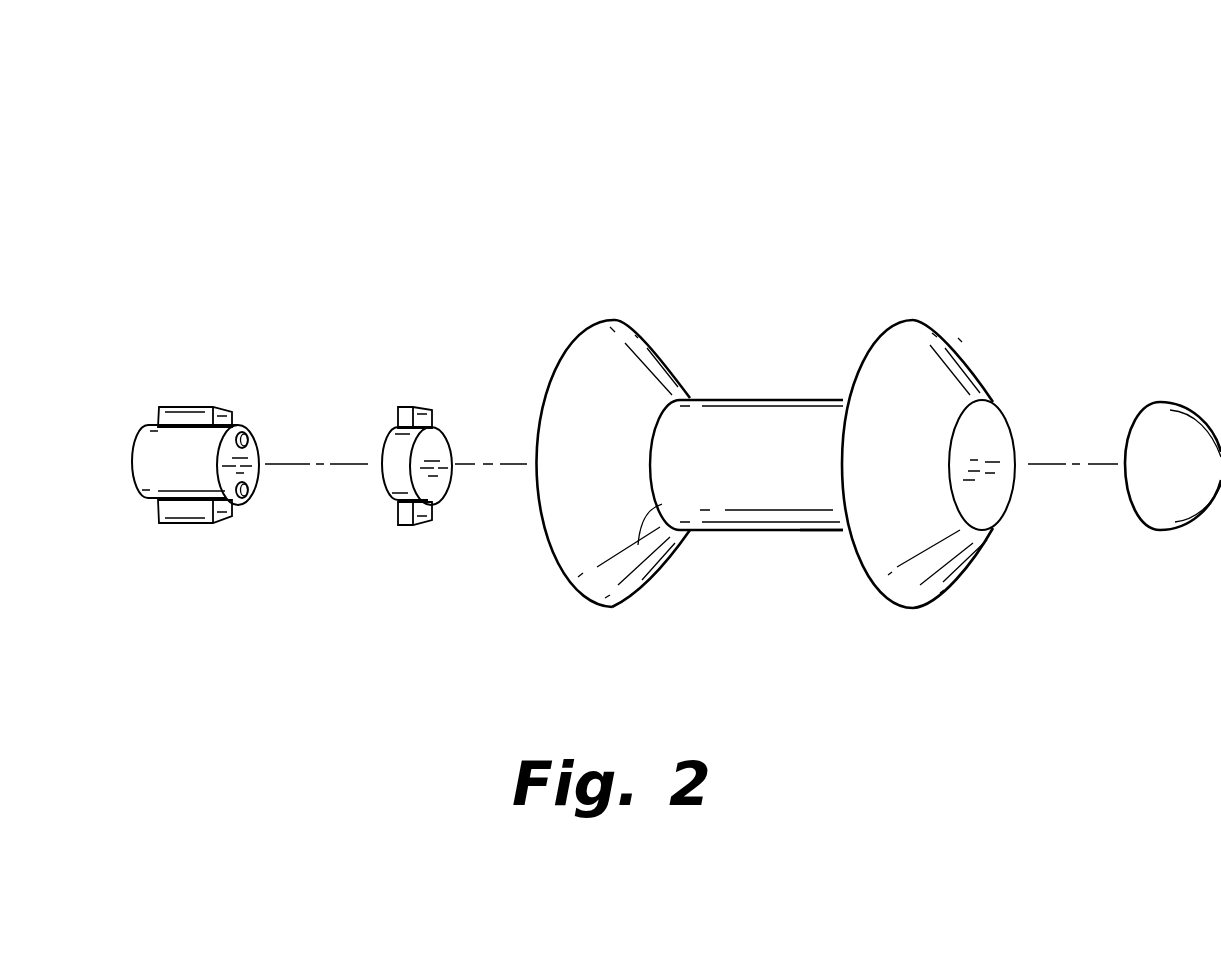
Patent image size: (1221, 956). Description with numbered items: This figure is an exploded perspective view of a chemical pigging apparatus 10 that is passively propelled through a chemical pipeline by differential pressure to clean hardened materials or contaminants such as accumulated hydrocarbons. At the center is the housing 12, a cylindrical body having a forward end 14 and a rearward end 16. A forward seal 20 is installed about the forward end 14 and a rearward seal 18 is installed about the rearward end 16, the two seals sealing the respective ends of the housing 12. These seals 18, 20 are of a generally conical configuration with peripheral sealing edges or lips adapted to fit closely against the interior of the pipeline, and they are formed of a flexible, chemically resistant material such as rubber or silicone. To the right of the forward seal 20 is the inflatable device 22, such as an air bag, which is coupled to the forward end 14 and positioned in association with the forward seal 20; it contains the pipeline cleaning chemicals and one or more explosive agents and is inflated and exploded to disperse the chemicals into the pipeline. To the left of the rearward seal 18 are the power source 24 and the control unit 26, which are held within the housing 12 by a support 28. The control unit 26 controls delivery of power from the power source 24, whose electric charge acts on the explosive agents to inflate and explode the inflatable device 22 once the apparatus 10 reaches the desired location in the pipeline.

The chemical pigging apparatus 10 is at (168, 148).
The housing 12 is at (755, 400).
The forward end 14 is at (843, 532).
The rearward end 16 is at (663, 577).
The rearward seal 18 is at (615, 320).
The forward seal 20 is at (933, 321).
The inflatable device 22 is at (1188, 375).
The power source 24 is at (255, 372).
The control unit 26 is at (444, 383).
The support 28 is at (192, 523).